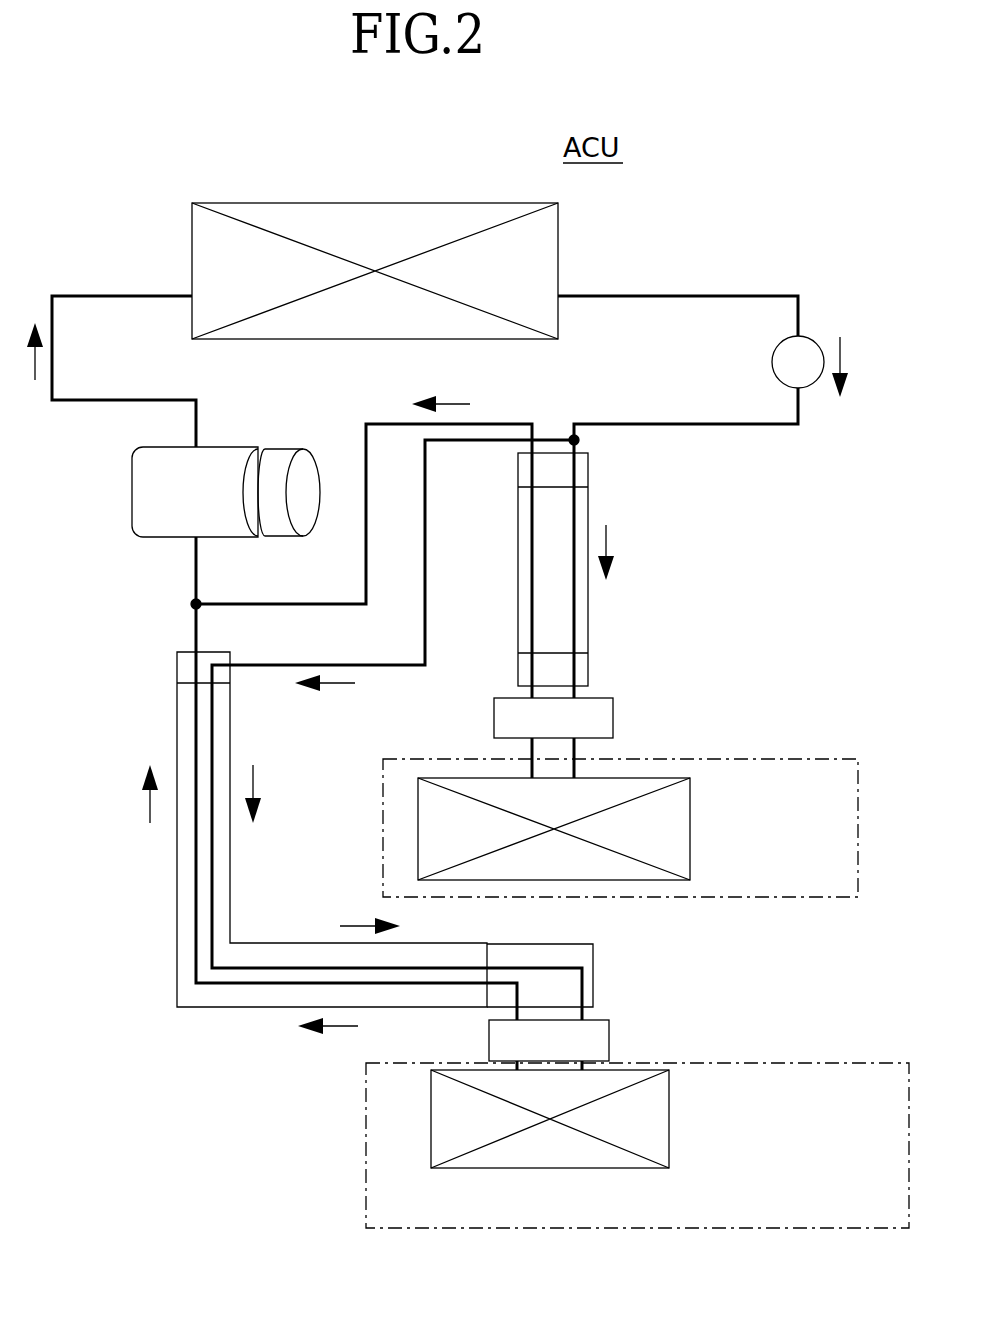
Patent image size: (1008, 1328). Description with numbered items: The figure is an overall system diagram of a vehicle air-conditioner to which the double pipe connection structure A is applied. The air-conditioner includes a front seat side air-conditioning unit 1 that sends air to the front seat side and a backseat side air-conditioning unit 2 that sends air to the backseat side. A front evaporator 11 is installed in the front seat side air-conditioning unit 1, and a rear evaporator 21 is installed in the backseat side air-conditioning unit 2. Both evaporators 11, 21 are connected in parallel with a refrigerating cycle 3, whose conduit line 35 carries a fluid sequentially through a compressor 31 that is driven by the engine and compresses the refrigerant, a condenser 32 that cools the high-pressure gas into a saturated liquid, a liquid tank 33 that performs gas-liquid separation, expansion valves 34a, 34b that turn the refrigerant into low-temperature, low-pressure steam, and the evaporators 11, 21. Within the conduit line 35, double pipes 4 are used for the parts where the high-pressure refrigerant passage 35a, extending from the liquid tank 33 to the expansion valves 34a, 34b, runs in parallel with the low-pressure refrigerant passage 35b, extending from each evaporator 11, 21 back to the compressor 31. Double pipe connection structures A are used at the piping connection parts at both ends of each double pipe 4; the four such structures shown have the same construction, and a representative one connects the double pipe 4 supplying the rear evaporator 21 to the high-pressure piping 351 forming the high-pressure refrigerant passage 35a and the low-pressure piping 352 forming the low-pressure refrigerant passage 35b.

The front seat side air-conditioning unit 1 is at (786, 748).
The backseat side air-conditioning unit 2 is at (789, 1052).
The refrigerating cycle 3 is at (651, 284).
The double pipe 4 is at (590, 608).
The front evaporator 11 is at (690, 848).
The rear evaporator 21 is at (670, 1145).
The compressor 31 is at (132, 475).
The condenser 32 is at (230, 202).
The liquid tank 33 is at (772, 362).
The expansion valve 34a is at (614, 718).
The expansion valve 34b is at (610, 1040).
The conduit line 35 is at (93, 295).
The high-pressure refrigerant passage 35a is at (761, 427).
The low-pressure refrigerant passage 35b is at (196, 571).
The high-pressure piping 351 is at (410, 667).
The low-pressure piping 352 is at (196, 630).
The double pipe connection structure A is at (604, 473).